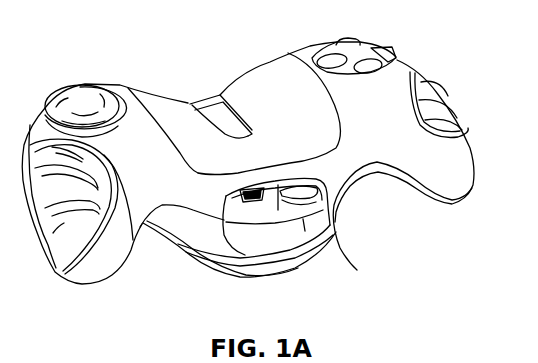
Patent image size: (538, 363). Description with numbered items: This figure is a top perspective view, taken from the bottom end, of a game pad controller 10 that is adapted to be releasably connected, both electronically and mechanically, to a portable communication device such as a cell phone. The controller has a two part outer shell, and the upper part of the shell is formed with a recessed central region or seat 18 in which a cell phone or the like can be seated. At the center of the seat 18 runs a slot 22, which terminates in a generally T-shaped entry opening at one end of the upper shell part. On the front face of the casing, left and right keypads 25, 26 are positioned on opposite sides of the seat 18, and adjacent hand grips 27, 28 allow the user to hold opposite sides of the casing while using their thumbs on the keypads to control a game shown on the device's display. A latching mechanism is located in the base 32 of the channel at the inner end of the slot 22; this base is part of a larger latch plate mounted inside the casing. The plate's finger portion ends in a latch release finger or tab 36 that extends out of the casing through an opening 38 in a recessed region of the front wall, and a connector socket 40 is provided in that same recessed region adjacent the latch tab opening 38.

The game pad controller 10 is at (440, 72).
The recessed central region or seat 18 is at (264, 88).
The slot 22 is at (210, 113).
The left keypad 25 is at (80, 96).
The right keypad 26 is at (354, 42).
The left hand grip 27 is at (49, 257).
The right hand grip 28 is at (458, 110).
The base of the channel 32 is at (227, 128).
The latch release finger or tab 36 is at (312, 190).
The opening 38 is at (293, 198).
The connector socket 40 is at (253, 198).